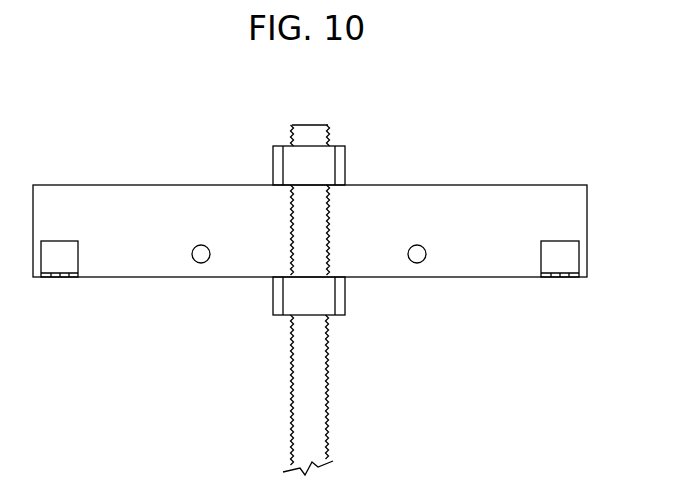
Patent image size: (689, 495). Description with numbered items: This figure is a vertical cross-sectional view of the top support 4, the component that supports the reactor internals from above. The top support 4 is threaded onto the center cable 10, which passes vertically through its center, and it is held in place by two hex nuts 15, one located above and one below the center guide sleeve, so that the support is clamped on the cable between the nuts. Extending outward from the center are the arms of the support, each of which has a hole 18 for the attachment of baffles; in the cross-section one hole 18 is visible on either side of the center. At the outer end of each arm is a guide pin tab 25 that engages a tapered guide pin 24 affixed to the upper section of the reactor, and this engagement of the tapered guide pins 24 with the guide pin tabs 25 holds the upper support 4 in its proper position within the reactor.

The top support 4 is at (437, 133).
The center cable 10 is at (292, 143).
The hex nuts 15 is at (273, 168).
The hole 18 is at (202, 263).
The tapered guide pins 24 is at (61, 273).
The guide pin tab 25 is at (568, 272).